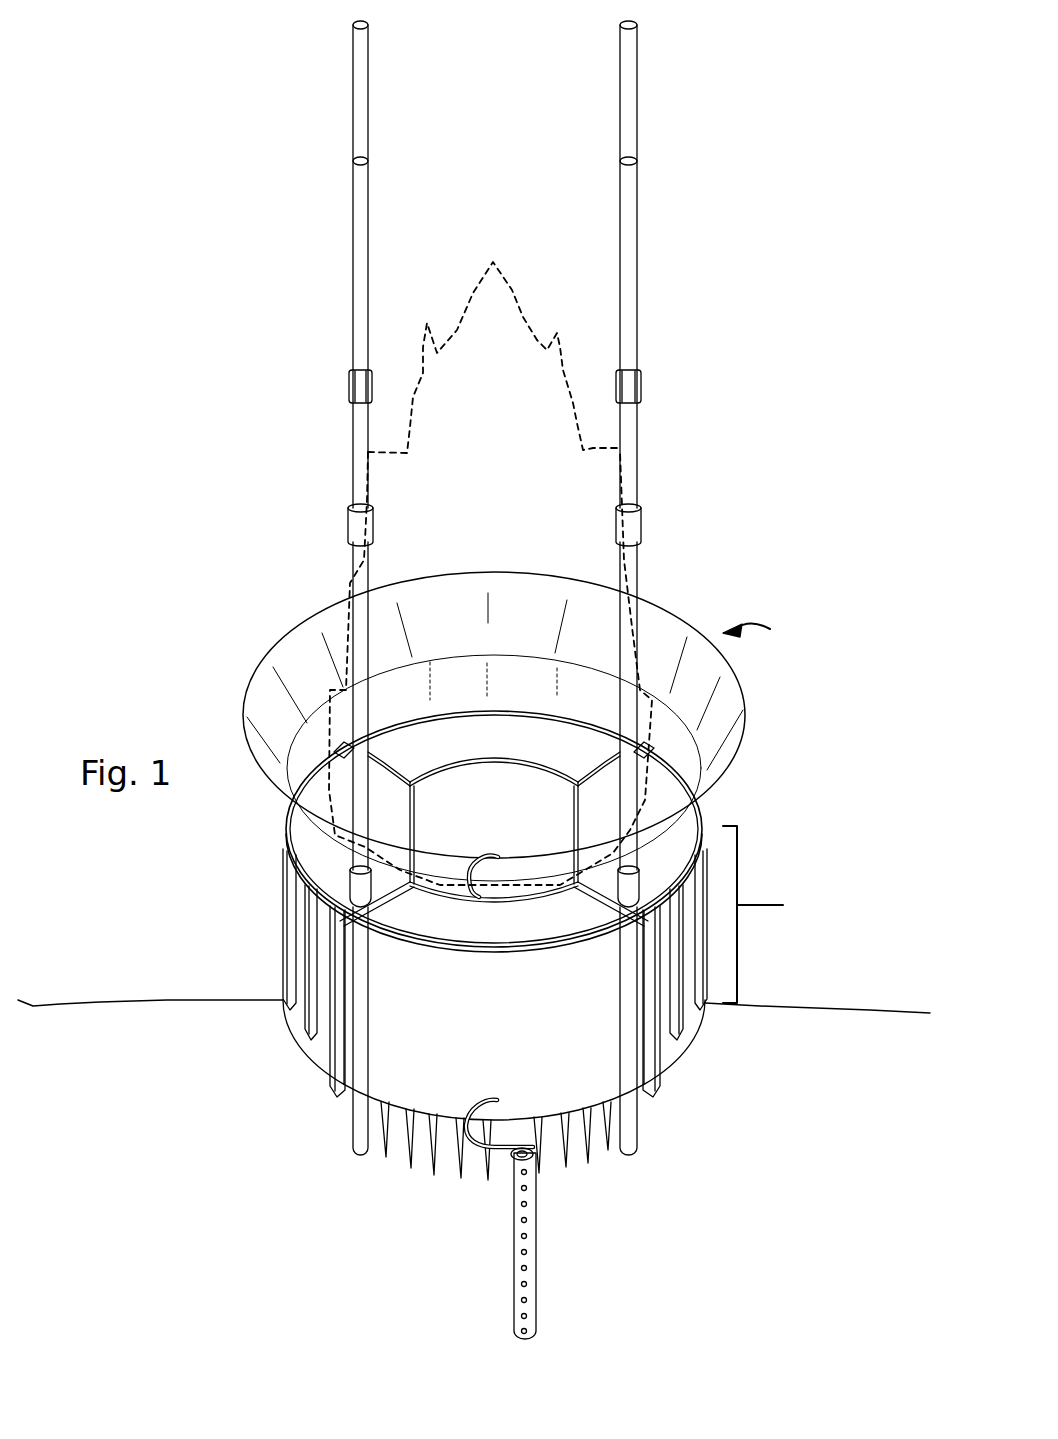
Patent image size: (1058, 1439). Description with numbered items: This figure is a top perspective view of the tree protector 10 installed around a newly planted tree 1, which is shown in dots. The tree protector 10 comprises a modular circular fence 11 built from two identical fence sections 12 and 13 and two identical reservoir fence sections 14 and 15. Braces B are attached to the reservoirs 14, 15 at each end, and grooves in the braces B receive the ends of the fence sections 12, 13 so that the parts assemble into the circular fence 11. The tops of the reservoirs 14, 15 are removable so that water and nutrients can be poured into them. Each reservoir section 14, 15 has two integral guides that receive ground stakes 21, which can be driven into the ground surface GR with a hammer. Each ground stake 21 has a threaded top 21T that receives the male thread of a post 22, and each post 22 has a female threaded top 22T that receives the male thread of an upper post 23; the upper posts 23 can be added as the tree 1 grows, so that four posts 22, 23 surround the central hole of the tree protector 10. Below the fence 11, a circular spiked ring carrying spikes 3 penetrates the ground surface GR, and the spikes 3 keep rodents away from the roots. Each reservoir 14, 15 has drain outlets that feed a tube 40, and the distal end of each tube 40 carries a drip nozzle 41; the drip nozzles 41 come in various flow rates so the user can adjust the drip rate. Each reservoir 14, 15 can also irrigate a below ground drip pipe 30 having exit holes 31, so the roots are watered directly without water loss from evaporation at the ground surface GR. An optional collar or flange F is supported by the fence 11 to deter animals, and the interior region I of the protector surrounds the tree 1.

The newly planted tree 1 is at (518, 304).
The tree protector 10 is at (763, 627).
The modular fence 11 is at (769, 914).
The fence section 12 is at (283, 827).
The fence section 13 is at (703, 812).
The reservoir fence section 14 is at (426, 1022).
The reservoir fence section 15 is at (528, 730).
The ground stake 21 is at (360, 1120).
The threaded top of ground stake 21T is at (360, 885).
The post 22 is at (355, 568).
The female threaded top of post 22T is at (354, 526).
The upper post 23 is at (360, 138).
The spikes 3 is at (588, 1144).
The below ground drip pipe 30 is at (537, 1263).
The exit holes 31 is at (522, 1283).
The tube 40 is at (499, 856).
The drip nozzle 41 is at (522, 1157).
The braces B is at (337, 745).
The collar or flange F is at (258, 676).
The ground surface GR is at (168, 1000).
The interior I is at (497, 939).